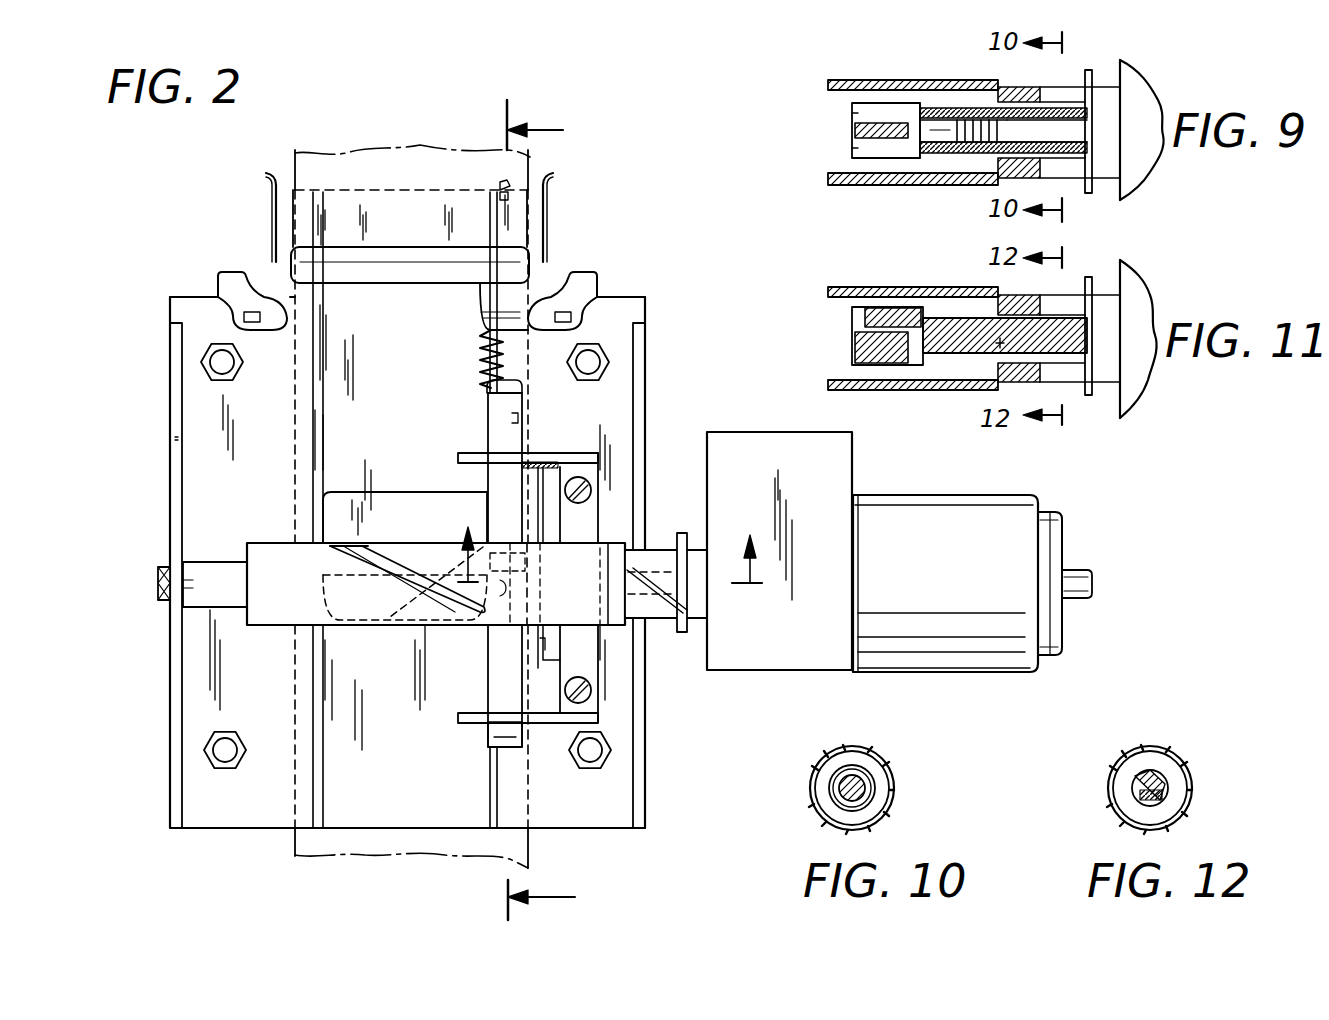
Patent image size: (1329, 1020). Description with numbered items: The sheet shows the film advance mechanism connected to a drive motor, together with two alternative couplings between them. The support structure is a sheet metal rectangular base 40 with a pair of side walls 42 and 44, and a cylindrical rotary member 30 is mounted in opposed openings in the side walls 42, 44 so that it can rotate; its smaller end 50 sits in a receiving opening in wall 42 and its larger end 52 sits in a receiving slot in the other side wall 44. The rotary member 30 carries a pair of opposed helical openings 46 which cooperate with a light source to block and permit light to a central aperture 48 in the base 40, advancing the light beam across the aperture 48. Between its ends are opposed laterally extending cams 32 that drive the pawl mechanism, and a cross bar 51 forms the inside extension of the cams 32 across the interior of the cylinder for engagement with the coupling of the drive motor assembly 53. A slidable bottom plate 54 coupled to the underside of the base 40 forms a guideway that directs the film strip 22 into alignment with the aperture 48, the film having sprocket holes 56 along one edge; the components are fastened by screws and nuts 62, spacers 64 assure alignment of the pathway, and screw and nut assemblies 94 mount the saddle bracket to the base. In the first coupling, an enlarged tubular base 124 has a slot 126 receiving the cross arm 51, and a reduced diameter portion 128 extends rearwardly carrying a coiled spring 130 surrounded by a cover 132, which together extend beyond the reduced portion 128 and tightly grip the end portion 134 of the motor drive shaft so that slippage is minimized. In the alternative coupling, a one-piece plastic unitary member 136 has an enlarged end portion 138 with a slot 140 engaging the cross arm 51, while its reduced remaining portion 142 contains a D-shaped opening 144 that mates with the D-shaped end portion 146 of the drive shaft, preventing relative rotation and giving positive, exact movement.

In FIG. 2, the film strip 22 is at (372, 160).
In FIG. 2, the rotary member 30 is at (263, 627).
In FIG. 9, the rotary member 30 is at (903, 82).
In FIG. 11, the rotary member 30 is at (900, 288).
In FIG. 2, the cams 32 is at (548, 633).
In FIG. 2, the base 40 is at (601, 818).
In FIG. 2, the side wall 42 is at (172, 412).
In FIG. 2, the side wall 44 is at (638, 470).
In FIG. 2, the helical openings 46 is at (445, 614).
In FIG. 2, the central aperture 48 is at (333, 520).
In FIG. 2, the smaller end 50 is at (158, 600).
In FIG. 9, the cross bar 51 is at (857, 130).
In FIG. 11, the cross bar 51 is at (860, 340).
In FIG. 2, the larger end 52 is at (656, 552).
In FIG. 2, the drive motor assembly 53 is at (945, 655).
In FIG. 2, the bottom plate 54 is at (250, 196).
In FIG. 2, the sprocket holes 56 is at (515, 157).
In FIG. 2, the screws and nuts 62 is at (226, 362).
In FIG. 2, the spacers 64 is at (232, 308).
In FIG. 2, the screw and nut assemblies 94 is at (590, 488).
In FIG. 9, the tubular base 124 is at (884, 102).
In FIG. 9, the slot 126 is at (855, 116).
In FIG. 9, the reduced diameter portion 128 is at (925, 158).
In FIG. 9, the coiled spring 130 is at (960, 148).
In FIG. 9, the cover 132 is at (1060, 100).
In FIG. 9, the end portion of drive shaft 134 is at (1065, 130).
In FIG. 11, the unitary member 136 is at (940, 316).
In FIG. 11, the enlarged end portion 138 is at (868, 314).
In FIG. 11, the slot 140 is at (858, 327).
In FIG. 11, the remaining portion 142 is at (978, 350).
In FIG. 11, the opening 144 is at (1010, 345).
In FIG. 10, the D-shaped end portion 146 is at (866, 780).
In FIG. 12, the D-shaped end portion 146 is at (1165, 790).